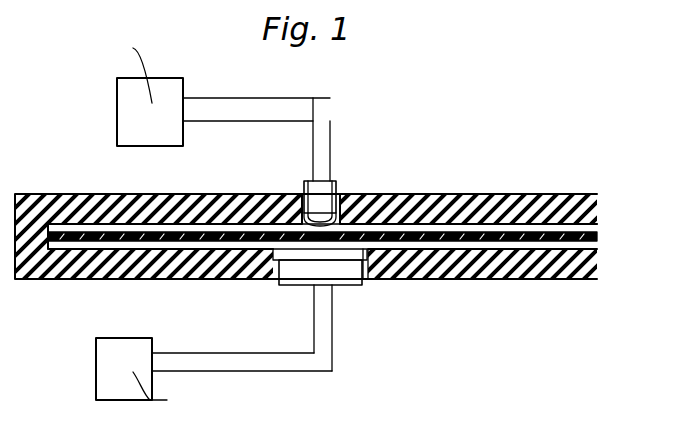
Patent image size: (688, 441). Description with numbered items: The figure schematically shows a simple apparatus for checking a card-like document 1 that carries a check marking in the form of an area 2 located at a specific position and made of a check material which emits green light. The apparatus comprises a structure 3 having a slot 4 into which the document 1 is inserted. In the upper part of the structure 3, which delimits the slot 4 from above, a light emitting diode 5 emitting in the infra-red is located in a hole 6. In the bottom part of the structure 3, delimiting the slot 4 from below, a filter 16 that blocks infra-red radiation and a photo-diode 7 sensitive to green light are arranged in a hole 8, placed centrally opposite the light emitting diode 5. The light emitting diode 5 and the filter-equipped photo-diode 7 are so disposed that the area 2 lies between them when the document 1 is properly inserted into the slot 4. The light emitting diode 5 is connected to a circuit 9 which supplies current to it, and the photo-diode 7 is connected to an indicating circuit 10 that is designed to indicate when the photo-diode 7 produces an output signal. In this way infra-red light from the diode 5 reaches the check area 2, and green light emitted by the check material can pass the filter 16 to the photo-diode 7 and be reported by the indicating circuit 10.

The card-like document 1 is at (593, 236).
The area 2 is at (323, 232).
The structure 3 is at (528, 195).
The slot 4 is at (432, 227).
The light emitting diode 5 is at (325, 190).
The hole 6 is at (303, 219).
The photo-diode 7 is at (338, 272).
The hole 8 is at (368, 280).
The circuit 9 is at (123, 135).
The indicating circuit 10 is at (98, 372).
The filter 16 is at (305, 254).